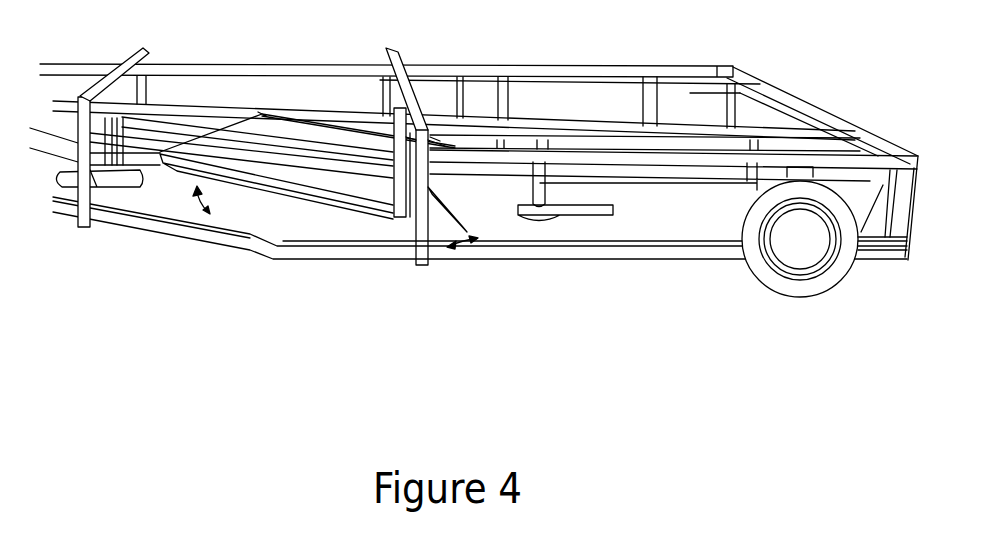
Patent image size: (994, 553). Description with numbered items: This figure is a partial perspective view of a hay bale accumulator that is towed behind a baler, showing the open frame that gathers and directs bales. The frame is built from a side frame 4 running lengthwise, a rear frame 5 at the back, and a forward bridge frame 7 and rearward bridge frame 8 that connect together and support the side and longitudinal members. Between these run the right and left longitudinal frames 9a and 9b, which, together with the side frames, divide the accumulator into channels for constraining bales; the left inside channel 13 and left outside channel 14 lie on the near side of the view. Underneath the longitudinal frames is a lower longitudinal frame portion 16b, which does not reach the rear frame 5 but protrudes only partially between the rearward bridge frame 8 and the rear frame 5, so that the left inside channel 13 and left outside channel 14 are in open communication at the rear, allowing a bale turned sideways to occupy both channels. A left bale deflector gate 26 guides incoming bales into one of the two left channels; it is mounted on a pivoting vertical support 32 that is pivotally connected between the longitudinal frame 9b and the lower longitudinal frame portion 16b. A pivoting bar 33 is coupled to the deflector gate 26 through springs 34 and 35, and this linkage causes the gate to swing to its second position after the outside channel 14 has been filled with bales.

The side frame 4 is at (297, 254).
The rear frame 5 is at (795, 102).
The forward bridge frame 7 is at (88, 228).
The rearward bridge frame 8 is at (389, 48).
The right longitudinal frame 9a is at (542, 81).
The left longitudinal frame 9b is at (613, 130).
The left inside channel 13 is at (514, 203).
The left outside channel 14 is at (514, 237).
The lower longitudinal frame portion 16b is at (613, 210).
The left bale deflector gate 26 is at (234, 175).
The pivoting vertical support 32 is at (395, 214).
The pivoting bar 33 is at (445, 206).
The spring 34 is at (325, 122).
The spring 35 is at (440, 146).